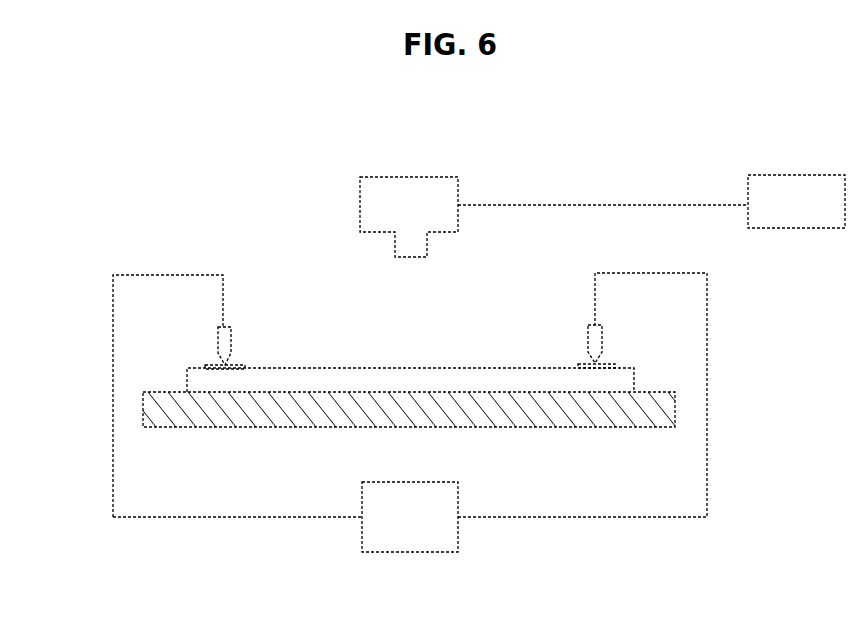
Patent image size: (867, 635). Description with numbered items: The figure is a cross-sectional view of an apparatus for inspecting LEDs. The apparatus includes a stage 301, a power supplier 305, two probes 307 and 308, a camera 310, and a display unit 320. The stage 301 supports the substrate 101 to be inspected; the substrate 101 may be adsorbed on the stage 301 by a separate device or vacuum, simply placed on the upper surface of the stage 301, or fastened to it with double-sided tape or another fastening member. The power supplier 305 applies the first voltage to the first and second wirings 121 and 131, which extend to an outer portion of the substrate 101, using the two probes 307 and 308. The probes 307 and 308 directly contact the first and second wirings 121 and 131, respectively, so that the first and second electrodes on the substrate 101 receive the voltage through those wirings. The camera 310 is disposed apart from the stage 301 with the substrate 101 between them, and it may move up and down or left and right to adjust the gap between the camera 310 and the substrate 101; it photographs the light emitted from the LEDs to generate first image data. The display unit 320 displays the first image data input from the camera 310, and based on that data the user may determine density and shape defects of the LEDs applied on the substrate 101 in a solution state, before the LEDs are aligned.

The camera 310 is at (410, 195).
The display unit 320 is at (797, 193).
The power supplier 305 is at (408, 530).
The stage 301 is at (670, 405).
The substrate 101 is at (628, 378).
The first wiring 121 is at (210, 365).
The second wiring 131 is at (607, 366).
The probe 307 is at (217, 332).
The probe 308 is at (602, 335).